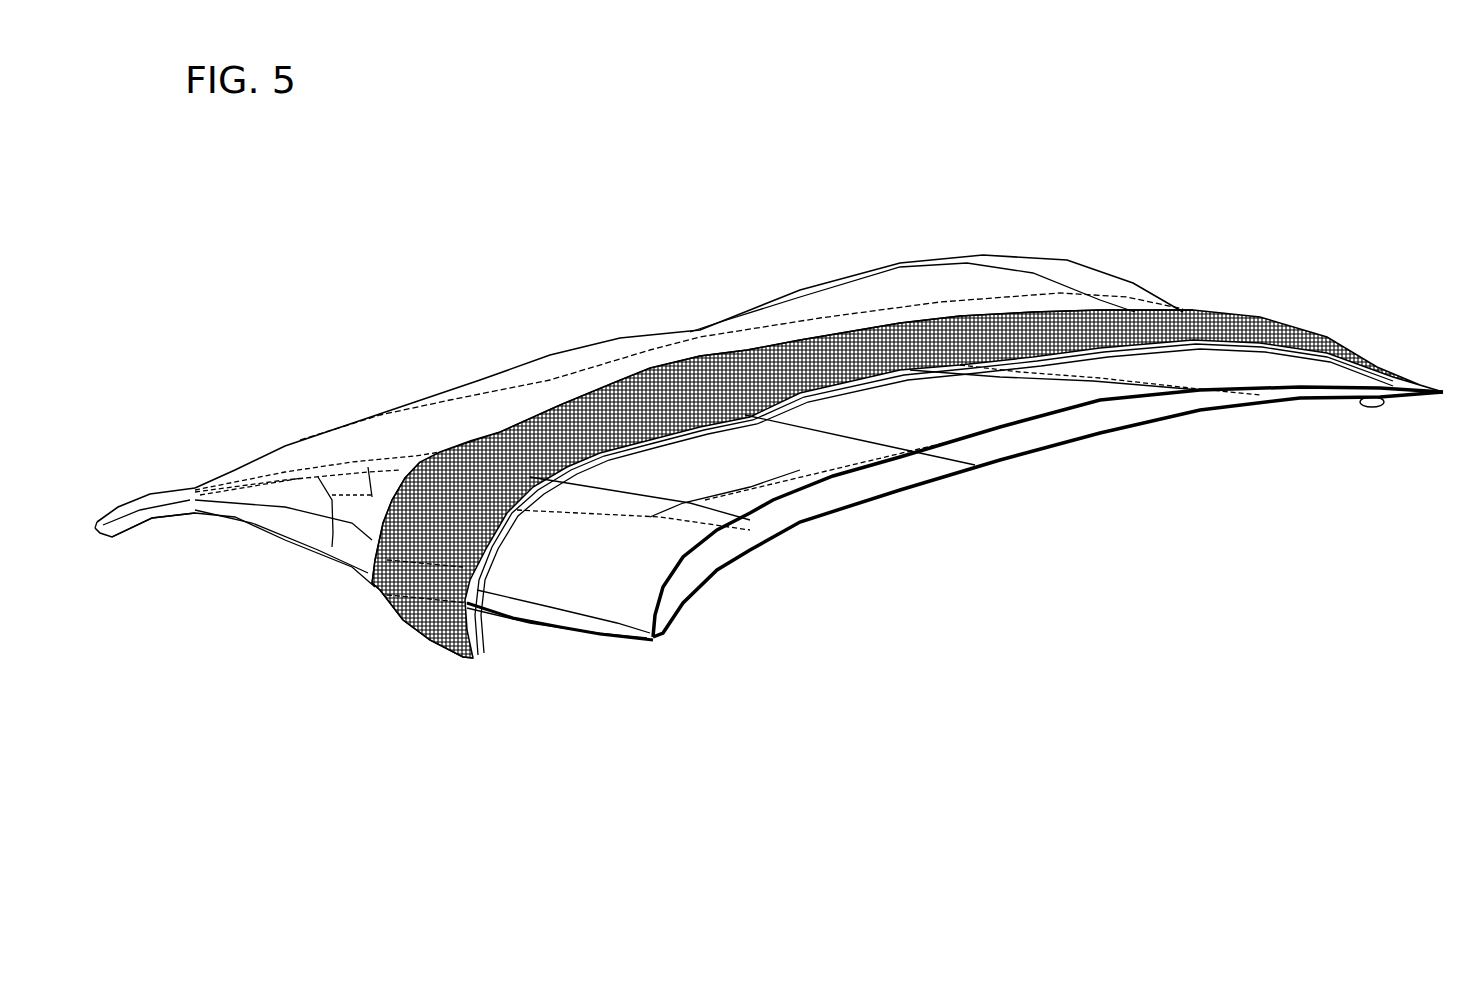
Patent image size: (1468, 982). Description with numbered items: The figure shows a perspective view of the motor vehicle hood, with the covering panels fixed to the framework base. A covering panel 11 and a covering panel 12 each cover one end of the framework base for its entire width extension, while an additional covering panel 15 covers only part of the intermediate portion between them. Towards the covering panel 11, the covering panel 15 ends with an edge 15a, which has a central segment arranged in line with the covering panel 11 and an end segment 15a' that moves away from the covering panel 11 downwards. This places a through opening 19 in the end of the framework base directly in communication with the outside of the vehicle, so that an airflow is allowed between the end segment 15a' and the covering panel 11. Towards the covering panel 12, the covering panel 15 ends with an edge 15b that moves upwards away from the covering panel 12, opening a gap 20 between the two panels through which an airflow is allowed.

The covering panel 15 is at (907, 418).
The edge 15a is at (816, 350).
The end segment 15a' is at (307, 473).
The covering panel 11 is at (639, 401).
The covering panel 12 is at (1110, 432).
The gap 20 is at (1052, 463).
The edge 15b is at (955, 499).
The through opening 19 is at (292, 623).